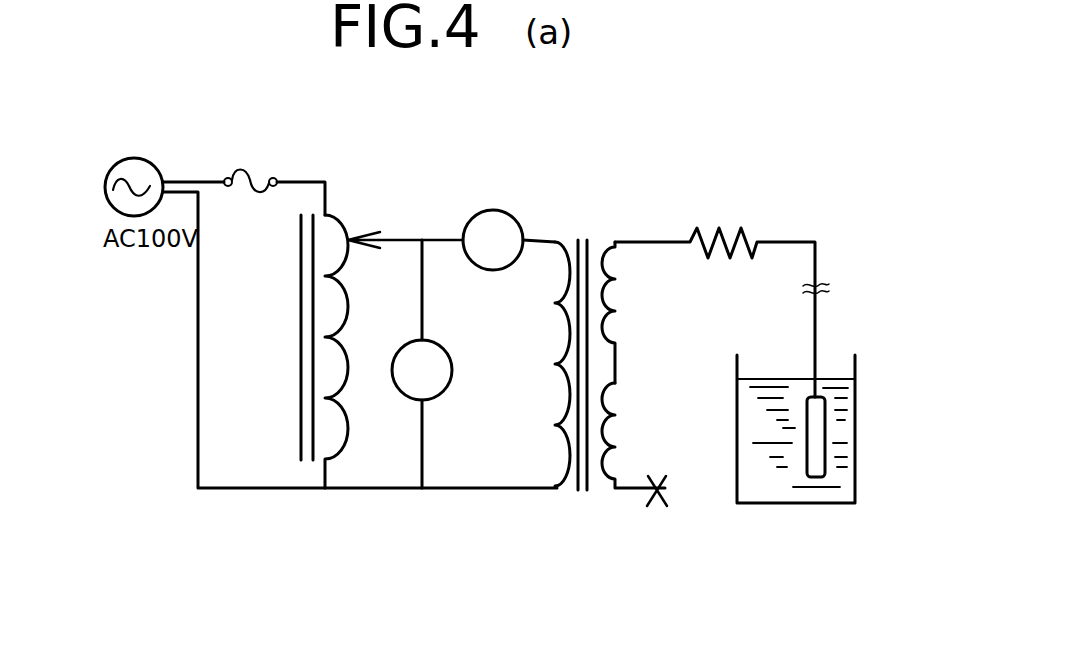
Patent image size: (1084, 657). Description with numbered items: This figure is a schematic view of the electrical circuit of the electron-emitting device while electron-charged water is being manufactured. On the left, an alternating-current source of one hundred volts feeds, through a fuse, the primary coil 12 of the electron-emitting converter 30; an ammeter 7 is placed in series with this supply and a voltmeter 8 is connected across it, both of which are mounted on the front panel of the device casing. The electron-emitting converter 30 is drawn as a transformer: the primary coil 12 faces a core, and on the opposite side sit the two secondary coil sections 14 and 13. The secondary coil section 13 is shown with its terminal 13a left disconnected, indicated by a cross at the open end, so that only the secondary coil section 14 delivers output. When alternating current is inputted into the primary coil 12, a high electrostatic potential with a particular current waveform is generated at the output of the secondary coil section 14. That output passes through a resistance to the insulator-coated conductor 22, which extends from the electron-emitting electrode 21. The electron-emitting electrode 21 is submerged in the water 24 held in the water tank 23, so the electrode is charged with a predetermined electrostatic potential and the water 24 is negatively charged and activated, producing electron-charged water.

The ammeter 7 is at (510, 210).
The voltmeter 8 is at (452, 358).
The primary coil 12 is at (562, 383).
The secondary coil section 13 is at (620, 430).
The terminal of the secondary coil section 13a is at (633, 490).
The secondary coil section 14 is at (620, 300).
The electron-emitting electrode 21 is at (817, 470).
The insulator-coated conductor 22 is at (818, 322).
The water tank 23 is at (737, 407).
The water 24 is at (783, 380).
The electron-emitting converter 30 is at (612, 208).